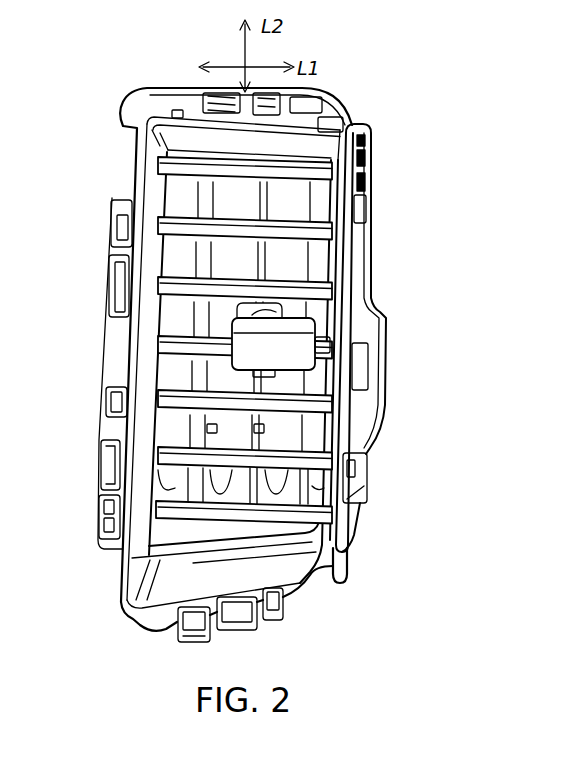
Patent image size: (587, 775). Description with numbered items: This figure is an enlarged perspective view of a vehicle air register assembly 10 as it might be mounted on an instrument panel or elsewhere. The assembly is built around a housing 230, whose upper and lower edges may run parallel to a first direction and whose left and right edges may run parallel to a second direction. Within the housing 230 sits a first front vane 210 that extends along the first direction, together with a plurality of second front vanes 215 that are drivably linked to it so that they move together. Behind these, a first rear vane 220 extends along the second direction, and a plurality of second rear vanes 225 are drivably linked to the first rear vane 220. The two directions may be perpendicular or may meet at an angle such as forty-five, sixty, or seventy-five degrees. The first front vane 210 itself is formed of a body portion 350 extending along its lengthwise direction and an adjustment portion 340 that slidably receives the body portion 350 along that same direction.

The vehicle air register assembly 10 is at (426, 62).
The first front vane 210 is at (175, 369).
The second front vanes 215 is at (168, 222).
The first rear vane 220 is at (166, 176).
The second rear vanes 225 is at (160, 482).
The housing 230 is at (350, 181).
The adjustment portion 340 is at (302, 350).
The body portion 350 is at (163, 341).